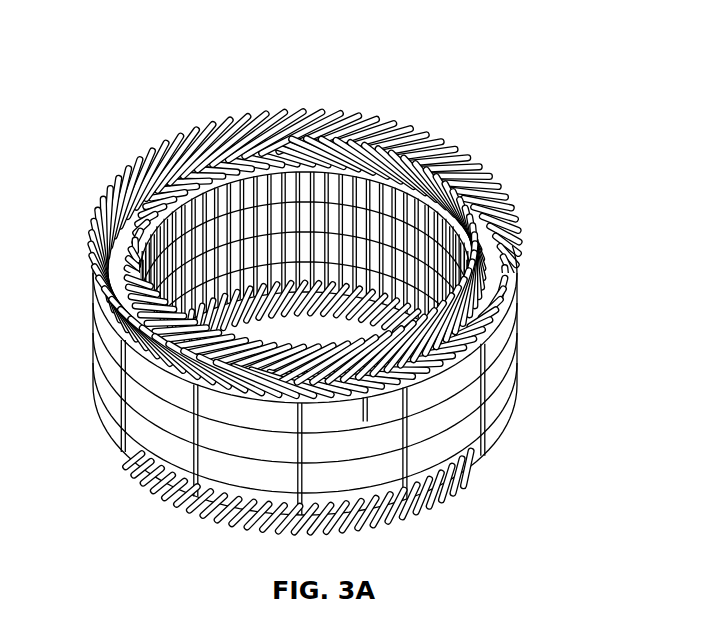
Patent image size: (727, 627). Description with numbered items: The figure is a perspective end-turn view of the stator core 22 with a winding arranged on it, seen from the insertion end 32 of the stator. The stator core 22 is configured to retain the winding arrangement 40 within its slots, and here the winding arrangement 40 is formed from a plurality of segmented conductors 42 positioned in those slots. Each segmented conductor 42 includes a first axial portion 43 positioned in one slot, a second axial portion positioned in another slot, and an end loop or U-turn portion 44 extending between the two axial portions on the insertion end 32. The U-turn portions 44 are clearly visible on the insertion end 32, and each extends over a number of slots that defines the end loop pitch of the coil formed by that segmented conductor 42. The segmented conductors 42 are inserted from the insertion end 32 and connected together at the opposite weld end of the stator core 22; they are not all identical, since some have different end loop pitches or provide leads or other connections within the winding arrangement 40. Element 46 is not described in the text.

The stator core 22 is at (485, 411).
The insertion end 32 is at (505, 247).
The winding arrangement 40 is at (319, 268).
The segmented conductors 42 is at (113, 213).
The first axial portion 43 is at (260, 190).
The U-turn portion 44 is at (134, 191).
The weld ends 46 is at (130, 507).